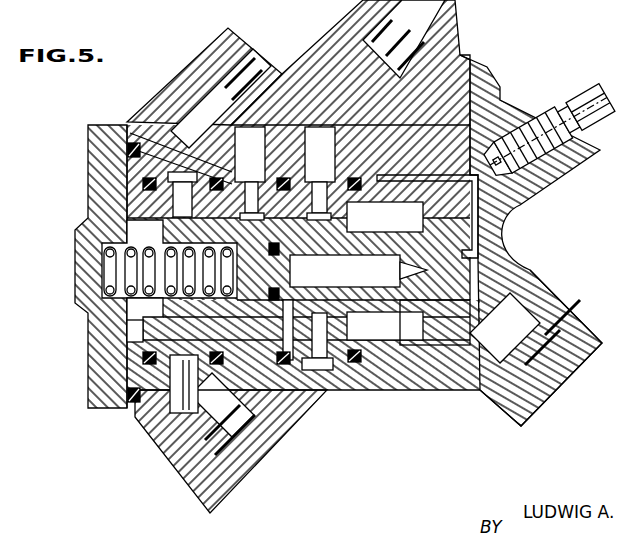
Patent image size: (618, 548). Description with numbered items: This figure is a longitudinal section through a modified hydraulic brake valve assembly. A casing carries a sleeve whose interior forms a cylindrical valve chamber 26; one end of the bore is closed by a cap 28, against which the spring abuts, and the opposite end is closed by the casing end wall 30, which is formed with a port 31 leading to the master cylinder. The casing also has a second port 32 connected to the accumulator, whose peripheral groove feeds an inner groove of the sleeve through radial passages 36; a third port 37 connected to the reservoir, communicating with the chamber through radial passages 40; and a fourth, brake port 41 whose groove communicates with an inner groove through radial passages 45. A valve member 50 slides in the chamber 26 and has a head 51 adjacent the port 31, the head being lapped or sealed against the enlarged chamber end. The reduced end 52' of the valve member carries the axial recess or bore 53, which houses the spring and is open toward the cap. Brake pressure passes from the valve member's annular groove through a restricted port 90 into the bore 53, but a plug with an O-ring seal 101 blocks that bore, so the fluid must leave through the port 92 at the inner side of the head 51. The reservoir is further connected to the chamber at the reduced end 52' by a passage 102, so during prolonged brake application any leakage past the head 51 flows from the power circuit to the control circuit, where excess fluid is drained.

The fourth port 41 is at (182, 70).
The third port 37 is at (435, 66).
The radial passages 45 is at (250, 195).
The radial passages 40 is at (321, 195).
The cap 28 is at (100, 172).
The radial passages 36 is at (177, 200).
The end wall 30 is at (522, 205).
The port 92 is at (465, 245).
The restricted port 90 is at (358, 271).
The bore 53 is at (140, 301).
The valve chamber 26 is at (122, 318).
The reduced end 52' is at (114, 385).
The valve member 50 is at (320, 372).
The head 51 is at (445, 330).
The O-ring seal 101 is at (283, 297).
The passage 102 is at (190, 338).
The second port 32 is at (257, 465).
The port 31 is at (568, 371).